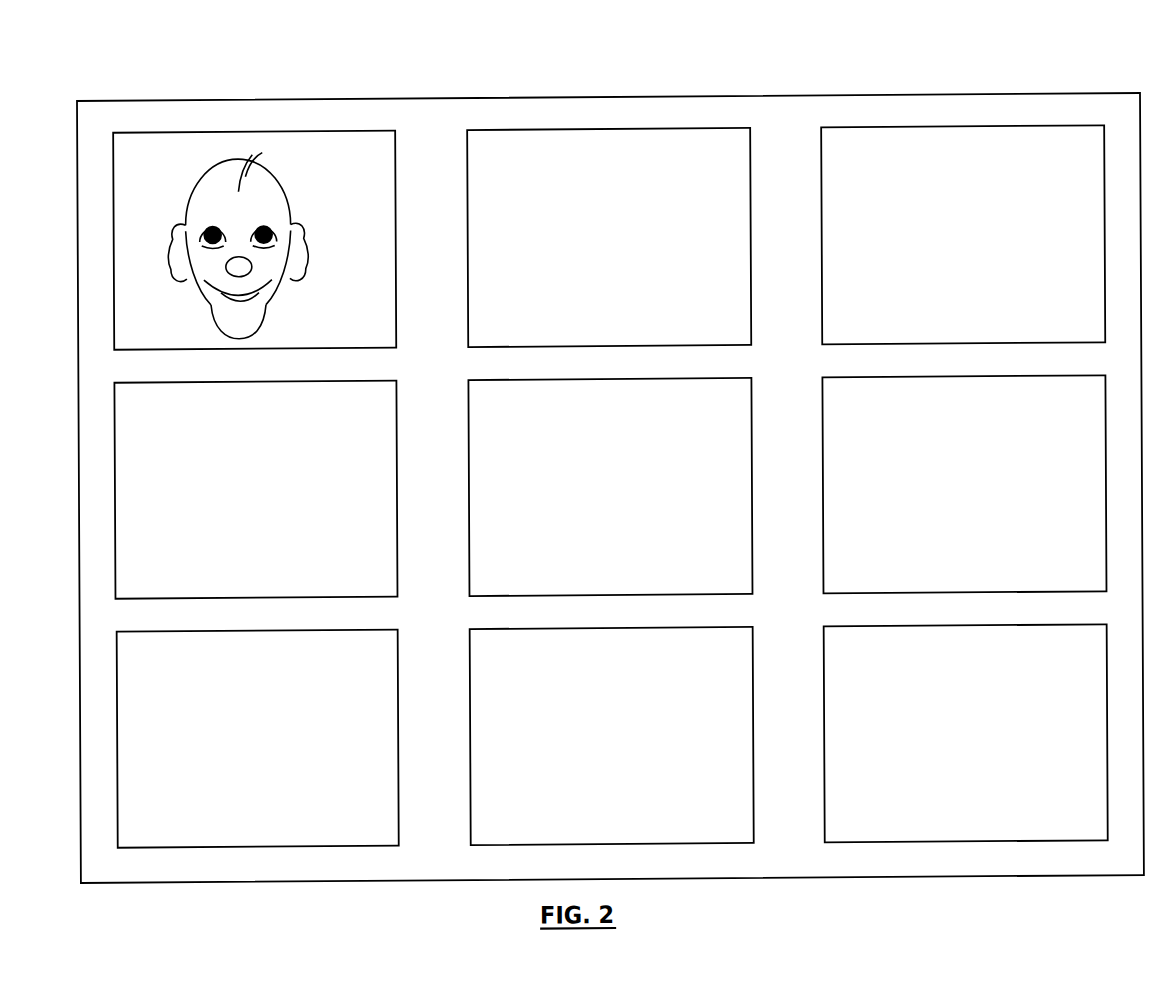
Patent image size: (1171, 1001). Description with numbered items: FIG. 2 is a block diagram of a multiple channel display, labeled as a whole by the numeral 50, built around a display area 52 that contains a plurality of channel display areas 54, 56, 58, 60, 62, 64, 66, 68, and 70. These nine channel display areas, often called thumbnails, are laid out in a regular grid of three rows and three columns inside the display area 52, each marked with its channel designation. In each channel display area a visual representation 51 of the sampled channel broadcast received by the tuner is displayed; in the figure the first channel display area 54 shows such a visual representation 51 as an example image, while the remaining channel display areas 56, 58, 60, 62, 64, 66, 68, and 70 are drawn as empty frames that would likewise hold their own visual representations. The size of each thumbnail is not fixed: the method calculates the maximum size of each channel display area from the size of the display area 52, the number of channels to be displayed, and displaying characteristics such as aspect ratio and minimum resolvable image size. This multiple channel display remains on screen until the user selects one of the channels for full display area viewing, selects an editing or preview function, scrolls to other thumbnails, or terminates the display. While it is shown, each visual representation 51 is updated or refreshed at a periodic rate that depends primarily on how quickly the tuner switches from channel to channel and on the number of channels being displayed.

The display screen 50 is at (321, 926).
The visual representation 51 is at (181, 170).
The display area 52 is at (1078, 884).
The channel display area 54 is at (340, 132).
The channel display area 56 is at (643, 132).
The channel display area 58 is at (989, 132).
The channel display area 60 is at (281, 382).
The channel display area 62 is at (630, 382).
The channel display area 64 is at (982, 382).
The channel display area 66 is at (278, 631).
The channel display area 68 is at (647, 631).
The channel display area 70 is at (998, 631).